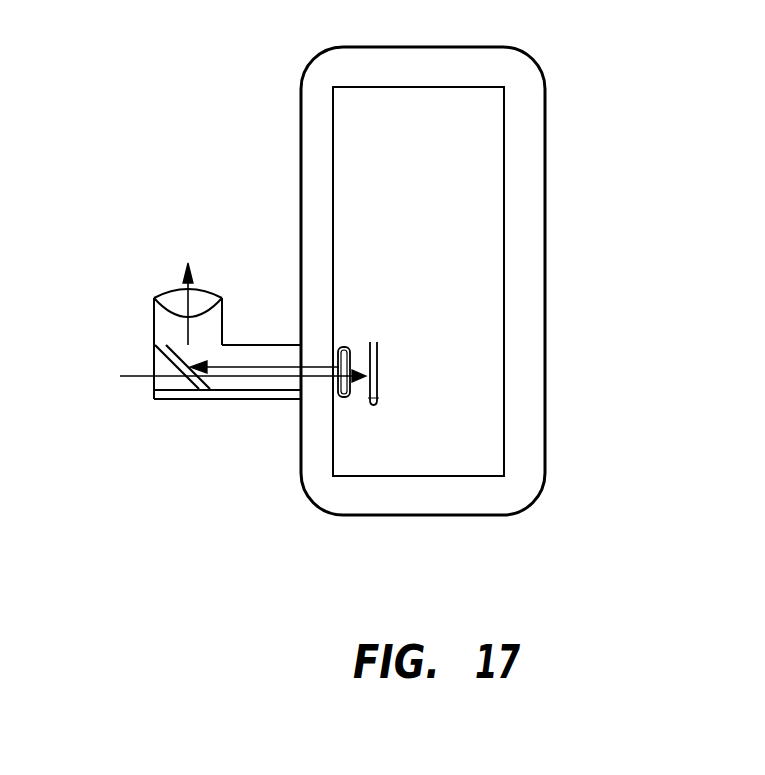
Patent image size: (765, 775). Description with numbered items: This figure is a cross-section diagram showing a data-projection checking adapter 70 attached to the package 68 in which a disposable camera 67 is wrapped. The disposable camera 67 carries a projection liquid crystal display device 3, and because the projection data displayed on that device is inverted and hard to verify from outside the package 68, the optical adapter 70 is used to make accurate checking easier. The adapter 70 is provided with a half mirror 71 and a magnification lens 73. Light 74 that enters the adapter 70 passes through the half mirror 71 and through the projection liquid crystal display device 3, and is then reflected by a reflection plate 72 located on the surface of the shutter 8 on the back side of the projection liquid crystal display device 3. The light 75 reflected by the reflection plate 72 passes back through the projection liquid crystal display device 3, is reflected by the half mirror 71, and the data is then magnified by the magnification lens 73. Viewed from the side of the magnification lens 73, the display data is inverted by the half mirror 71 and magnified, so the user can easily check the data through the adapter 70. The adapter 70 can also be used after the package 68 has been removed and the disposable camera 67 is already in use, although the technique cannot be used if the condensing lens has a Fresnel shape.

The package 68 is at (544, 151).
The disposable camera 67 is at (505, 351).
The magnification lens 73 is at (167, 302).
The light 75 is at (268, 367).
The adapter 70 is at (160, 399).
The half mirror 71 is at (200, 391).
The light 74 is at (138, 378).
The projection liquid crystal display device 3 is at (341, 398).
The shutter 8 is at (381, 404).
The reflection plate 72 is at (370, 403).